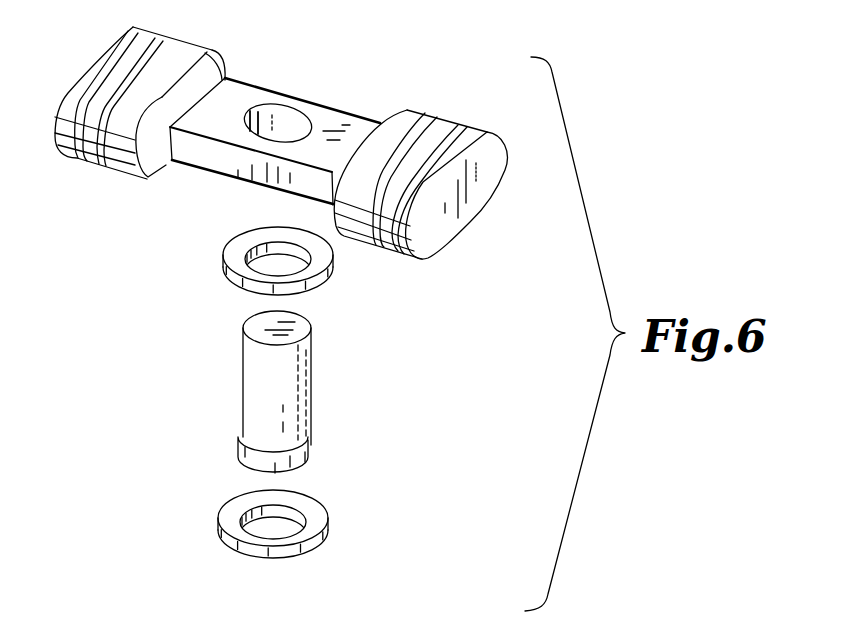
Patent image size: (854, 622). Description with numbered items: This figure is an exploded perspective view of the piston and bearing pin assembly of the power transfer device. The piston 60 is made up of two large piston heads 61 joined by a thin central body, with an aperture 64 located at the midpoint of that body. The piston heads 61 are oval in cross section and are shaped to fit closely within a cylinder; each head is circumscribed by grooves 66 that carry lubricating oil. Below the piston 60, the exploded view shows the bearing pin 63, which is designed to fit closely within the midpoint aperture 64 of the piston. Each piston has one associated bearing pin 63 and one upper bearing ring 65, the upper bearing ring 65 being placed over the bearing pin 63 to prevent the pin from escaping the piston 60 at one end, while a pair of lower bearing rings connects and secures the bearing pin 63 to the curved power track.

The piston 60 is at (172, 8).
The piston heads 61 is at (81, 154).
The bearing pin 63 is at (310, 424).
The aperture 64 is at (288, 118).
The upper bearing ring 65 is at (332, 270).
The grooves 66 is at (266, 147).